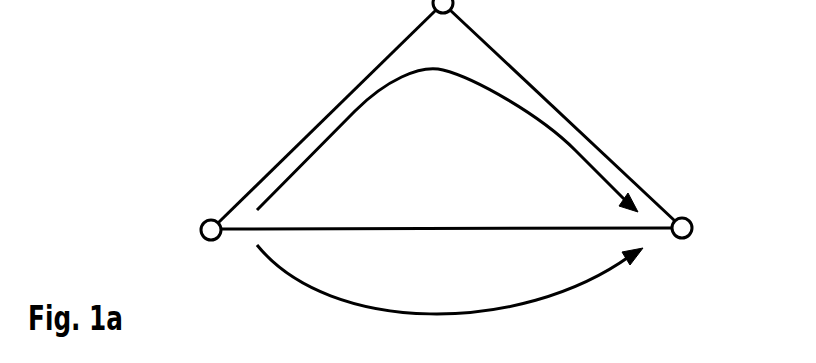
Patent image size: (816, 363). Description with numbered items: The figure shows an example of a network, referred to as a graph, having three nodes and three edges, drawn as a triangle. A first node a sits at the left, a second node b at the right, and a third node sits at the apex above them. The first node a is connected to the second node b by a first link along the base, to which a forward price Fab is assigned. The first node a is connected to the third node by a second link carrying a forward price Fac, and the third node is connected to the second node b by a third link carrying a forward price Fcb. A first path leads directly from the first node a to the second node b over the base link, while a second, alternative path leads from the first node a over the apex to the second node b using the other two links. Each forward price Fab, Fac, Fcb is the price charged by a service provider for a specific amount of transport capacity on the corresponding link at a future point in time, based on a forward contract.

The first node a is at (194, 227).
The second node b is at (698, 229).
The forward price on link ac Fac is at (327, 116).
The forward price on link cb Fcb is at (562, 115).
The forward price on link ab Fab is at (446, 257).